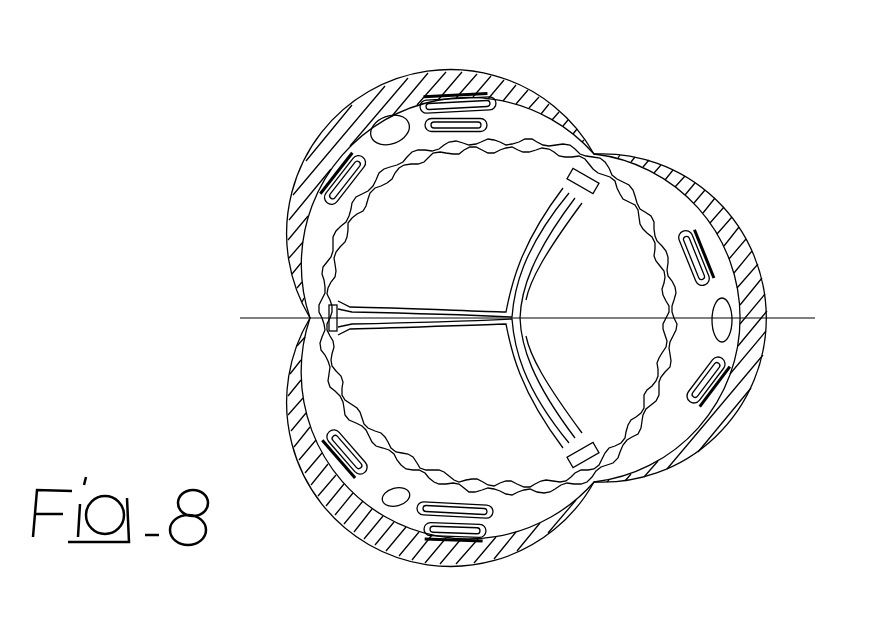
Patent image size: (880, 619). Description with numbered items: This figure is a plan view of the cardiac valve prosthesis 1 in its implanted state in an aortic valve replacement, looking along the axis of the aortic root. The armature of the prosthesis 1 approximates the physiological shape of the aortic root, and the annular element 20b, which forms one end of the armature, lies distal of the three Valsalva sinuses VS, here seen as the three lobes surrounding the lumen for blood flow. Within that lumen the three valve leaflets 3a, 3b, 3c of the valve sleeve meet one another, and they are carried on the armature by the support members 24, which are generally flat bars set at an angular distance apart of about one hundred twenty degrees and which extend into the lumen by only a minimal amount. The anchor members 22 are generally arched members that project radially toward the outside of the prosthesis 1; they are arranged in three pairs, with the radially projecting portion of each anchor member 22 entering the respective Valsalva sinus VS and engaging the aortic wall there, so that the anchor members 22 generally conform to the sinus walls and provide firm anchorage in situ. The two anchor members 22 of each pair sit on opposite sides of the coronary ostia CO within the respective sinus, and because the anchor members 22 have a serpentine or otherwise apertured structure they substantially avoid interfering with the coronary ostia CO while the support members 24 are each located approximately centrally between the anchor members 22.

The prosthesis 1 is at (244, 206).
The anchor members 22 is at (436, 99).
The support members 24 is at (588, 172).
The valve leaflet 3a is at (497, 455).
The valve leaflet 3b is at (612, 256).
The valve leaflet 3c is at (398, 270).
The annular element 20b is at (321, 396).
The coronary ostia CO is at (378, 127).
The Valsalva sinuses VS is at (503, 116).